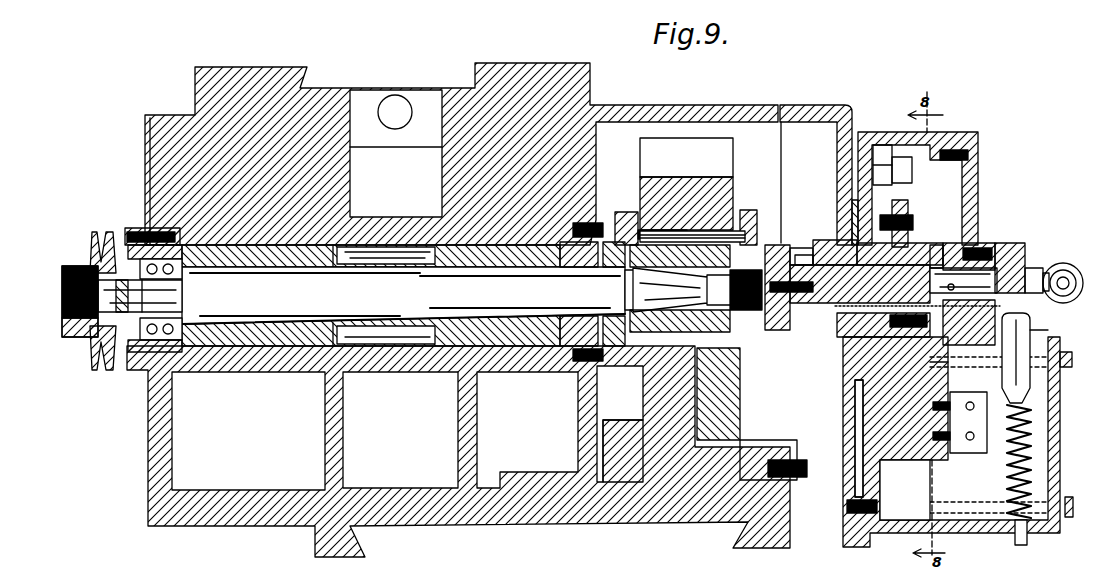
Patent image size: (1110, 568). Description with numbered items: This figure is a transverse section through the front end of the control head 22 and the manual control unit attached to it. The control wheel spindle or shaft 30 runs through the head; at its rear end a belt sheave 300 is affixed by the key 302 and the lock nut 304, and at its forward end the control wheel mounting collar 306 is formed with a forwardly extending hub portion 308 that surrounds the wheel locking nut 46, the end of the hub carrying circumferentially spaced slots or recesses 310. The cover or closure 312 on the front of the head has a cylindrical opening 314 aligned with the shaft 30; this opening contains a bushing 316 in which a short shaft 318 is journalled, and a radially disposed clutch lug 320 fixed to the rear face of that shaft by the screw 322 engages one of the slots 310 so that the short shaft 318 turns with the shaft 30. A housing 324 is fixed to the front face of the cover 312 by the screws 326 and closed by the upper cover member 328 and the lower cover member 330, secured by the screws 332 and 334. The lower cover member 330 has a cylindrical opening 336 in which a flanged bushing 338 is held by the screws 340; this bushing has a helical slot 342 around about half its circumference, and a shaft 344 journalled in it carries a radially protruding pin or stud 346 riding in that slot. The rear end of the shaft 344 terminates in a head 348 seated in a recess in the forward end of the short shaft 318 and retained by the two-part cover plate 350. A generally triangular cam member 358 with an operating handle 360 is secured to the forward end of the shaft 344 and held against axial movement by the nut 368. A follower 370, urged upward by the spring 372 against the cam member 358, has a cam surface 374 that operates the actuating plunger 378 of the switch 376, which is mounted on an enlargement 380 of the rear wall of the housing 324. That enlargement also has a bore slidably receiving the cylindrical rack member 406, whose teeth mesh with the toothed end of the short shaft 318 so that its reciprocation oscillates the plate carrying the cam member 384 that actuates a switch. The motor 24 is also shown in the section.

The control head 22 is at (588, 80).
The motor 24 is at (645, 192).
The control shaft 30 is at (417, 295).
The wheel locking nut 46 is at (745, 331).
The belt sheave 300 is at (95, 350).
The key 302 is at (96, 262).
The lock nut 304 is at (62, 272).
The control wheel mounting collar 306 is at (735, 385).
The hub portion 308 is at (753, 243).
The slots or recesses 310 is at (803, 325).
The cover or closure 312 is at (798, 105).
The cylindrical opening 314 is at (830, 240).
The bushing 316 is at (836, 340).
The short shaft 318 is at (797, 258).
The clutch lug 320 is at (787, 245).
The screw 322 is at (776, 312).
The housing 324 is at (940, 132).
The screws 326 is at (905, 490).
The upper cover member 328 is at (978, 200).
The lower cover member 330 is at (888, 215).
The screws 332 is at (968, 153).
The screws 334 is at (1060, 522).
The cylindrical opening 336 is at (980, 248).
The flanged bushing 338 is at (902, 157).
The screws 340 is at (1015, 243).
The helical slot 342 is at (935, 367).
The shaft 344 is at (1040, 300).
The pin or stud 346 is at (950, 243).
The head 348 is at (937, 245).
The two-part cover plate 350 is at (937, 270).
The cam member 358 is at (1035, 313).
The operating handle 360 is at (858, 455).
The nut 368 is at (1063, 283).
The follower 370 is at (1052, 378).
The spring 372 is at (1036, 456).
The cam surface 374 is at (1032, 398).
The switch 376 is at (962, 455).
The actuating member or plunger 378 is at (994, 440).
The enlargement 380 is at (965, 283).
The cam member 384 is at (908, 205).
The cylindrical member 406 is at (850, 393).